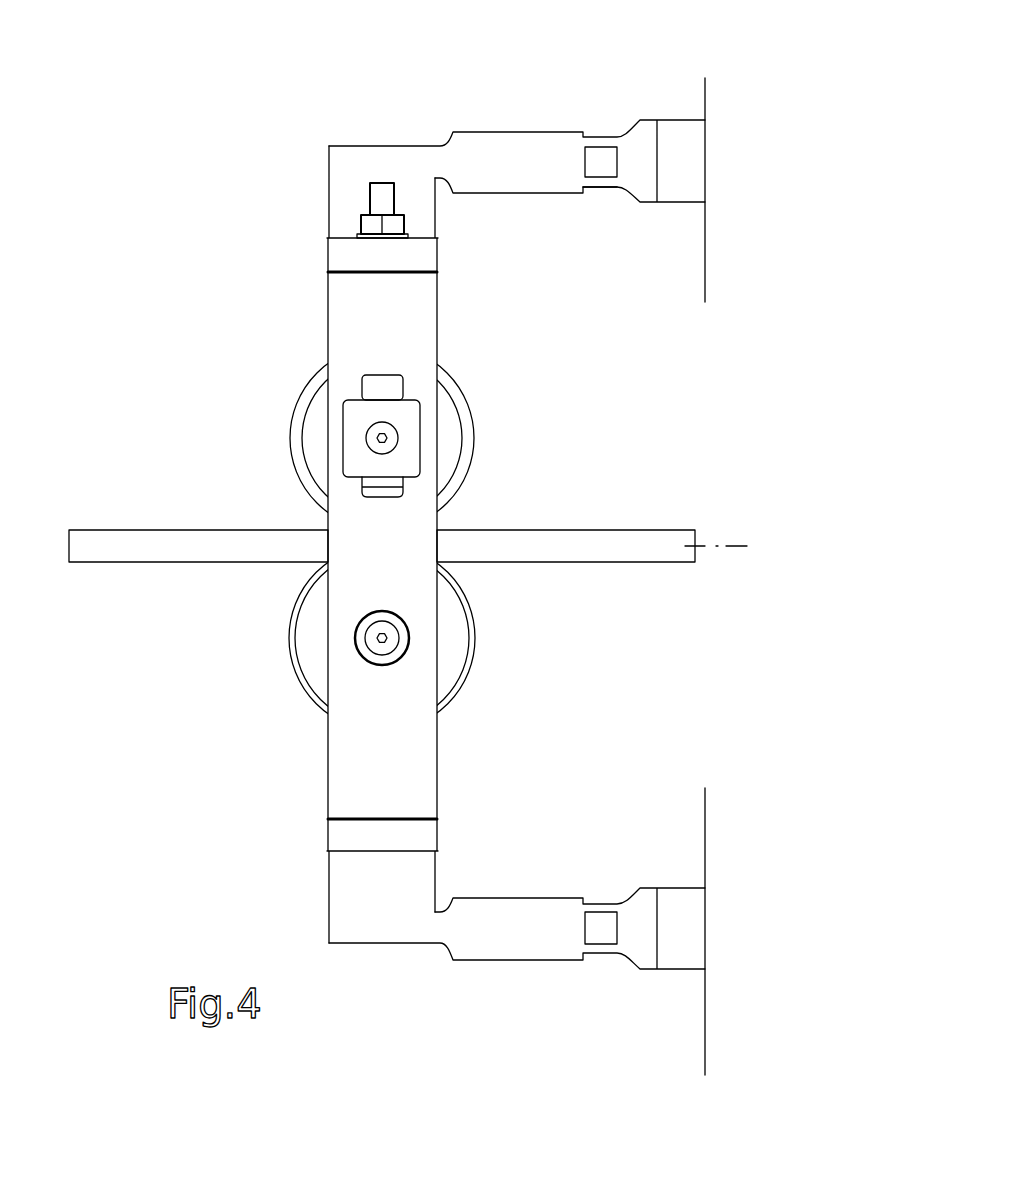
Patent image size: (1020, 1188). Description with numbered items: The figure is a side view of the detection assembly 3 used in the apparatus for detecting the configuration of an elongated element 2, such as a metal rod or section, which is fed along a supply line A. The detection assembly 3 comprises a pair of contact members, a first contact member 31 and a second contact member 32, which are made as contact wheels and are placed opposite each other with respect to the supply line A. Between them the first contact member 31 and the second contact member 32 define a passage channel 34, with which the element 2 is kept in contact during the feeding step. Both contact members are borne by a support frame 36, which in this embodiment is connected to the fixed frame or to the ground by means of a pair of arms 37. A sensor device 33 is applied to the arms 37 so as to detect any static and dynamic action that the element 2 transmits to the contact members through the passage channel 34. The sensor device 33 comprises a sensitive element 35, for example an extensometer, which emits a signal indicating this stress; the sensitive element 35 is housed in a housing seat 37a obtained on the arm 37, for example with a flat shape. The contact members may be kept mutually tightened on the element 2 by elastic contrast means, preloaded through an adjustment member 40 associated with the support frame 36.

The element 2 is at (633, 530).
The detection assembly 3 is at (183, 138).
The first contact member 31 is at (475, 648).
The second contact member 32 is at (472, 408).
The sensor device 33 is at (598, 92).
The passage channel 34 is at (485, 506).
The sensitive element 35 is at (595, 165).
The support frame 36 is at (340, 220).
The arm 37 is at (527, 183).
The housing seat 37a is at (607, 216).
The adjustment member 40 is at (404, 225).
The supply line A is at (743, 546).